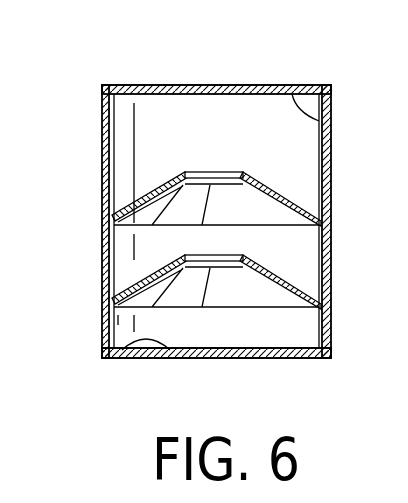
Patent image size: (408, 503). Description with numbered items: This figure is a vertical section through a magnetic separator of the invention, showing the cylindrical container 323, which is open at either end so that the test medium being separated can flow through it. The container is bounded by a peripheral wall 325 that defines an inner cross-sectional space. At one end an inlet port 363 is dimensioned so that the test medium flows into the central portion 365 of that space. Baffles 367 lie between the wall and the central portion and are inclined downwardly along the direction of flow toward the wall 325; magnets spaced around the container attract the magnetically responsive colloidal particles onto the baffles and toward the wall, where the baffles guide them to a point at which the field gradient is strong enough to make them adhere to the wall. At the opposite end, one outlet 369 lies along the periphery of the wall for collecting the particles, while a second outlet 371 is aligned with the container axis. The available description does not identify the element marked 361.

The cylindrical container 323 is at (98, 114).
The peripheral wall 325 is at (320, 120).
The inner wall 361 is at (133, 333).
The inlet port 363 is at (228, 85).
The central portion 365 is at (243, 172).
The inclined baffle surface 367 is at (268, 195).
The outlet 369 is at (190, 386).
The second outlet 371 is at (226, 356).